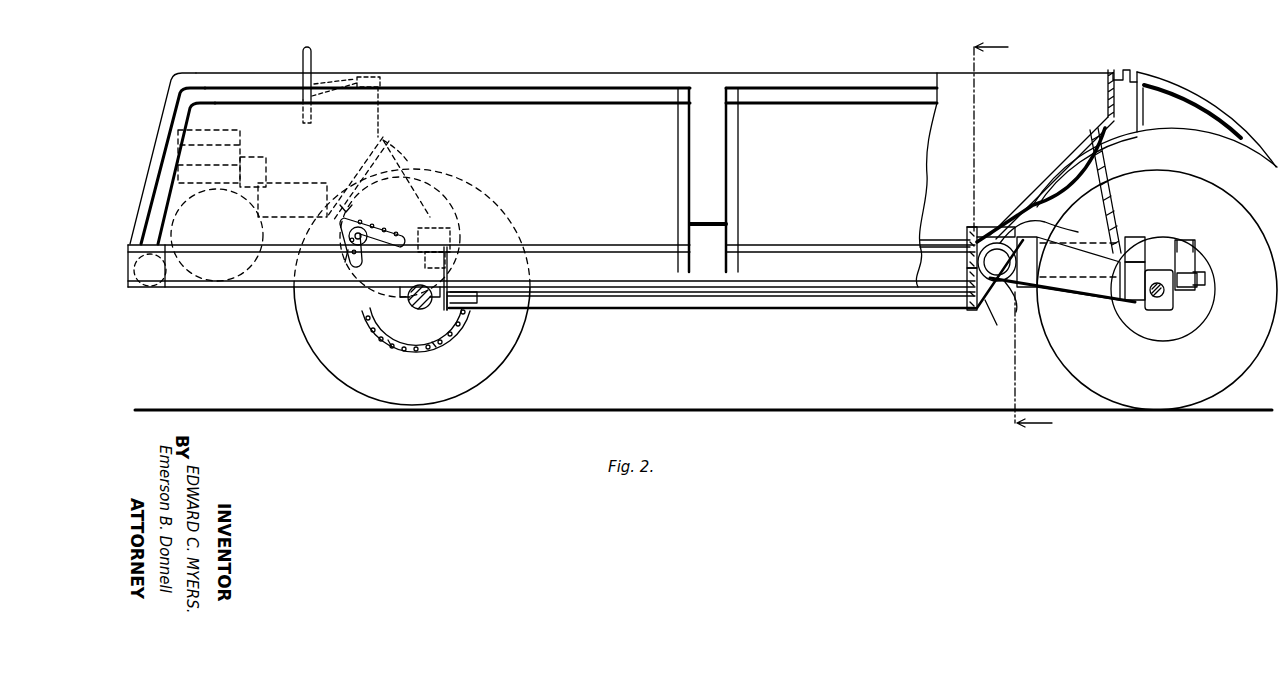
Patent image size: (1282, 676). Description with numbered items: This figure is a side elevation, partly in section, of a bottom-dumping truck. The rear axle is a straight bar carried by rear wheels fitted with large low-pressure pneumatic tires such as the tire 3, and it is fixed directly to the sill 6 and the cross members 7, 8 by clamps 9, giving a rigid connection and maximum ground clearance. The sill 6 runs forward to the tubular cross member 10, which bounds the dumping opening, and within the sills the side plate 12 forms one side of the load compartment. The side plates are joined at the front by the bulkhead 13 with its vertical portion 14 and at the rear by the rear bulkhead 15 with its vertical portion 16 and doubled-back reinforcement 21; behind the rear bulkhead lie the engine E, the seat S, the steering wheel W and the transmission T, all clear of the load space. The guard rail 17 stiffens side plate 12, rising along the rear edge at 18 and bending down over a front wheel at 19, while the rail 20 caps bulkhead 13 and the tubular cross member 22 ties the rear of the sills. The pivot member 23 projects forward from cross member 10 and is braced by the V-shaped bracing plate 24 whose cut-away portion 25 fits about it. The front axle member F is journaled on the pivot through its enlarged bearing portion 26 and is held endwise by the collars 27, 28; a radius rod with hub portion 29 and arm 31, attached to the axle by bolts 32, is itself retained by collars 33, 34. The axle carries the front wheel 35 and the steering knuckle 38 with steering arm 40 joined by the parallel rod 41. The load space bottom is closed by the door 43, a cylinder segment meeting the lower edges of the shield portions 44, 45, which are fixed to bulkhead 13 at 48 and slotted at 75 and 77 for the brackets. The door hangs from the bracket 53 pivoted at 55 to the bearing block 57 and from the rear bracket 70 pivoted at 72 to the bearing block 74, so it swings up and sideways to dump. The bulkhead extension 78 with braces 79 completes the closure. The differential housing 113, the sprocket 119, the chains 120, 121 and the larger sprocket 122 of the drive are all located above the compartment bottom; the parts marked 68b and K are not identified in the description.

The pneumatic tire 3 is at (522, 343).
The sill 6 is at (571, 250).
The cross member 7 is at (372, 304).
The cross member 8 is at (455, 265).
The clamp 9 is at (404, 312).
The cross member 10 is at (1000, 285).
The side plate 12 is at (571, 180).
The bulkhead 13 is at (1047, 176).
The vertical portion of bulkhead 14 is at (1106, 92).
The rear bulkhead 15 is at (406, 171).
The vertical portion of rear bulkhead 16 is at (384, 120).
The guard rail 17 is at (508, 70).
The rear edge portion of guard rail 18 is at (173, 90).
The downward bend of guard rail 19 is at (1206, 90).
The rail 20 is at (1122, 70).
The doubled-back reinforcement 21 is at (368, 72).
The tubular cross member 22 is at (160, 291).
The pivot member 23 is at (1066, 252).
The bracing plate 24 is at (1098, 190).
The cut-away portion 25 is at (1122, 244).
The enlarged bearing portion 26 is at (1148, 236).
The collar 27 is at (1115, 290).
The collar 28 is at (1192, 250).
The hub portion 29 is at (1053, 225).
The arm 31 is at (1085, 285).
The bolts 32 is at (1133, 302).
The collar 33 is at (1016, 314).
The collar 34 is at (1078, 228).
The front wheel 35 is at (1232, 208).
The steering knuckle 38 is at (1158, 311).
The steering arm 40 is at (1178, 284).
The parallel rod 41 is at (1206, 278).
The door 43 is at (893, 300).
The shield portion 44 is at (934, 212).
The shield portion 45 is at (836, 298).
The shield fixing point 48 is at (1030, 203).
The bracket 53 is at (970, 248).
The pivot 55 is at (969, 234).
The bearing block 57 is at (978, 222).
The body post cross member 68b is at (703, 163).
The bracket 70 is at (470, 304).
The pivot 72 is at (460, 235).
The bearing block 74 is at (440, 226).
The slot 75 is at (966, 302).
The slot 77 is at (456, 326).
The downward extension of bulkhead 78 is at (980, 302).
The brace 79 is at (990, 320).
The differential housing 113 is at (345, 206).
The sprocket 119 is at (333, 278).
The chain 120 is at (414, 340).
The chain 121 is at (374, 222).
The larger sprocket 122 is at (434, 340).
The engine E is at (240, 132).
The seat S is at (261, 164).
The transmission T is at (292, 200).
The steering wheel W is at (312, 58).
The drive chain K is at (413, 334).
The axle member F is at (1170, 232).